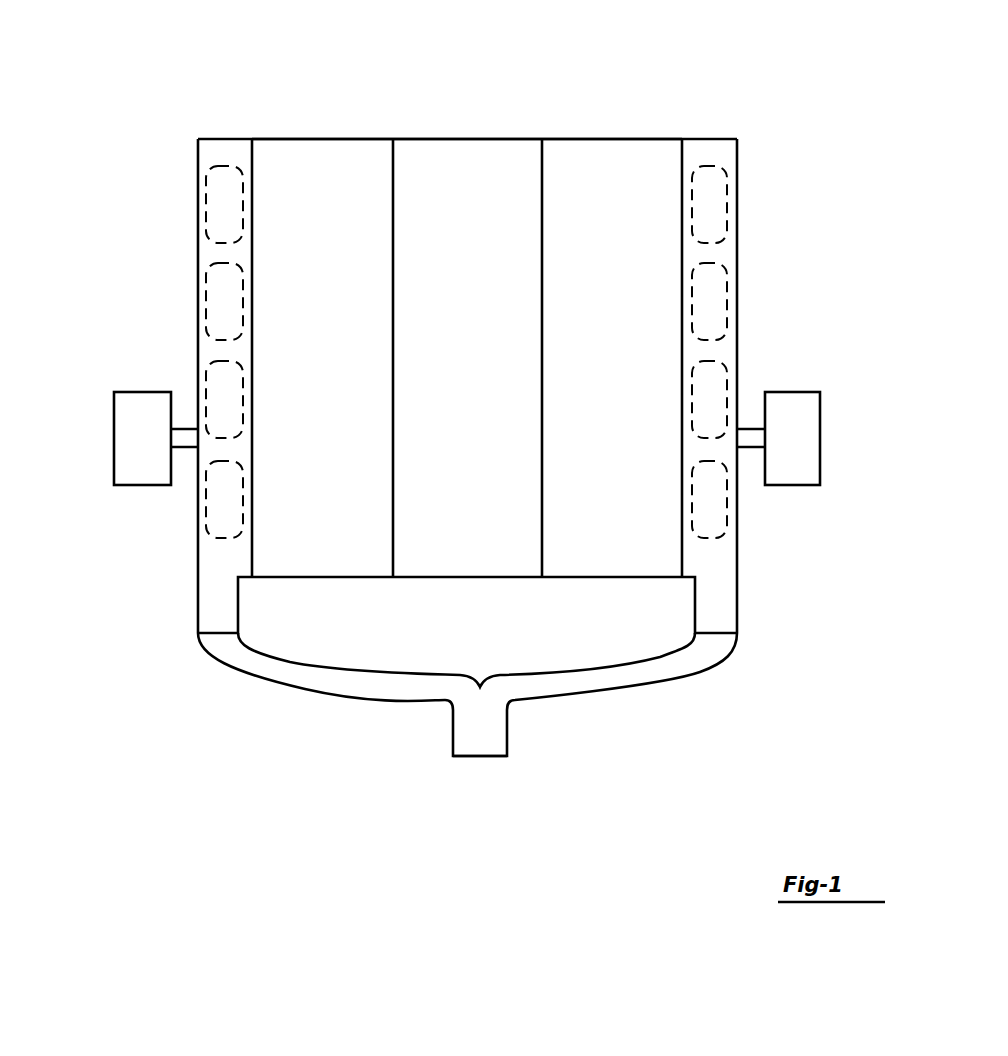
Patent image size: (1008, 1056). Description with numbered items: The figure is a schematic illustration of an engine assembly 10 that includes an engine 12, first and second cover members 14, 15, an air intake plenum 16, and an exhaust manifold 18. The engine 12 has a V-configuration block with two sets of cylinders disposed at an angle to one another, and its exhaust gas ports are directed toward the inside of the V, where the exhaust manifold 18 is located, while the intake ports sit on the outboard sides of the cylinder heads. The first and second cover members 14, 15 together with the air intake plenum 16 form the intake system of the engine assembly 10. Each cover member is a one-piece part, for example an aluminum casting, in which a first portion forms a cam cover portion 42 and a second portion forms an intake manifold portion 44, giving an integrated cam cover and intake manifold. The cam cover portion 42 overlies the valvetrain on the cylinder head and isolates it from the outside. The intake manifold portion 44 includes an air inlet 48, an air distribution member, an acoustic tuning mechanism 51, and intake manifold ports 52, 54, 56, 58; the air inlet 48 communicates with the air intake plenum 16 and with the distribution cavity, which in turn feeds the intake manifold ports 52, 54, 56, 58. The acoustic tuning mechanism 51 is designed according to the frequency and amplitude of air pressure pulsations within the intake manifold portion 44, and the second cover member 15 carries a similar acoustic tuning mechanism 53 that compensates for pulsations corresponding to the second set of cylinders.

The engine assembly 10 is at (141, 105).
The engine 12 is at (441, 105).
The first cover member 14 is at (198, 260).
The second cover member 15 is at (737, 275).
The air intake plenum 16 is at (640, 688).
The exhaust manifold 18 is at (487, 139).
The cam cover portion 42 is at (328, 139).
The intake manifold portion 44 is at (227, 139).
The air inlet 48 is at (198, 577).
The acoustic tuning mechanism 51 is at (114, 430).
The intake manifold port 52 is at (242, 478).
The acoustic tuning mechanism 53 is at (820, 431).
The intake manifold port 54 is at (242, 389).
The intake manifold port 56 is at (243, 299).
The intake manifold port 58 is at (243, 182).